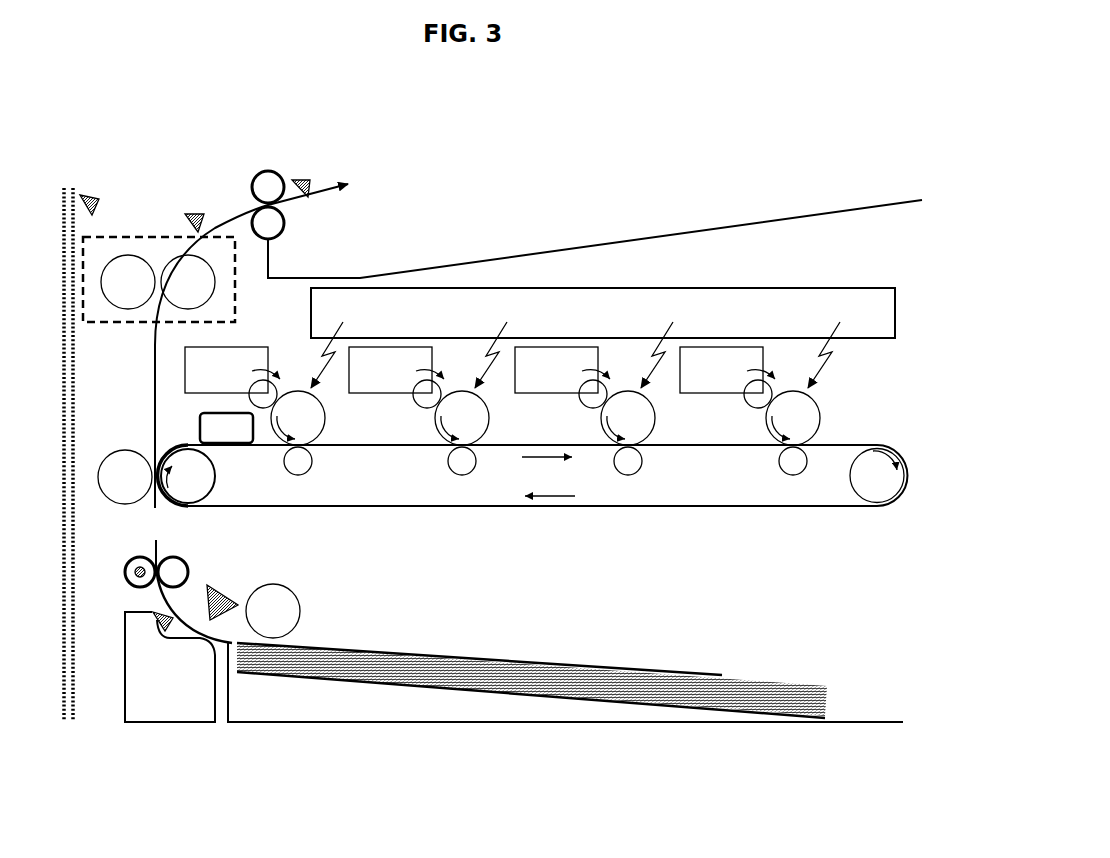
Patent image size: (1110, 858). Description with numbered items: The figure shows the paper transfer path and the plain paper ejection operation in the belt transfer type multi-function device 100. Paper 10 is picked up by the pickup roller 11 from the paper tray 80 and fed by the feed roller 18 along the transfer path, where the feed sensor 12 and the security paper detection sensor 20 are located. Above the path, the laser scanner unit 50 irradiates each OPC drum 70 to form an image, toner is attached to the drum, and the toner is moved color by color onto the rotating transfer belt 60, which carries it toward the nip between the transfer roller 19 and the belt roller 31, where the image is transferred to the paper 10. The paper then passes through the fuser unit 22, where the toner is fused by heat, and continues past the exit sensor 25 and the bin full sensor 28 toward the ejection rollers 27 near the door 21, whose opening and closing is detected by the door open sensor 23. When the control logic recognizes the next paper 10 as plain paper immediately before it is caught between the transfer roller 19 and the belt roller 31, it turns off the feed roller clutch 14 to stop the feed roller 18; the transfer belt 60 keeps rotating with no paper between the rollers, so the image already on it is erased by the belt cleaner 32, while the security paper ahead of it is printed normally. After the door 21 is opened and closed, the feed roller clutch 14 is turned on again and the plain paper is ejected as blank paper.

The belt transfer type multi-function device 100 is at (641, 156).
The paper 10 is at (150, 383).
The pickup roller 11 is at (292, 602).
The feed sensor 12 is at (158, 624).
The feed roller clutch 14 is at (125, 570).
The feed roller 18 is at (134, 558).
The transfer roller 19 is at (107, 474).
The security paper detection sensor 20 is at (223, 622).
The door 21 is at (68, 188).
The fuser unit 22 is at (107, 281).
The door open sensor 23 is at (84, 194).
The exit sensor 25 is at (190, 214).
The discharge rollers 27 is at (268, 170).
The bin full sensor 28 is at (295, 181).
The belt roller 31 is at (219, 492).
The belt cleaner 32 is at (256, 432).
The laser scanner unit 50 is at (842, 286).
The transfer belt 60 is at (639, 510).
The OPC drum 70 is at (326, 416).
The paper tray 80 is at (512, 726).